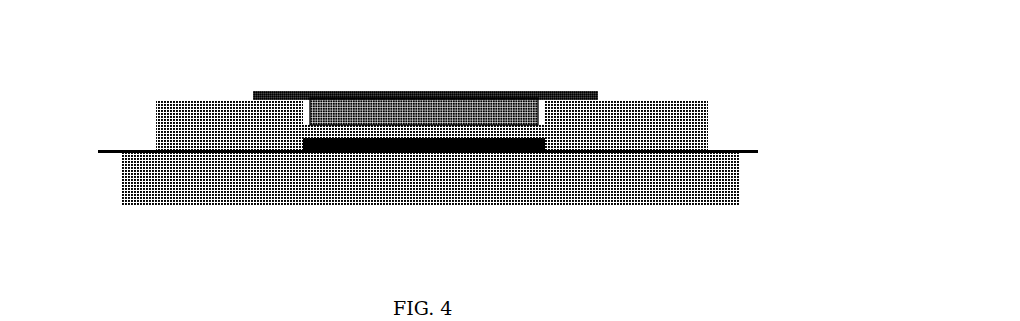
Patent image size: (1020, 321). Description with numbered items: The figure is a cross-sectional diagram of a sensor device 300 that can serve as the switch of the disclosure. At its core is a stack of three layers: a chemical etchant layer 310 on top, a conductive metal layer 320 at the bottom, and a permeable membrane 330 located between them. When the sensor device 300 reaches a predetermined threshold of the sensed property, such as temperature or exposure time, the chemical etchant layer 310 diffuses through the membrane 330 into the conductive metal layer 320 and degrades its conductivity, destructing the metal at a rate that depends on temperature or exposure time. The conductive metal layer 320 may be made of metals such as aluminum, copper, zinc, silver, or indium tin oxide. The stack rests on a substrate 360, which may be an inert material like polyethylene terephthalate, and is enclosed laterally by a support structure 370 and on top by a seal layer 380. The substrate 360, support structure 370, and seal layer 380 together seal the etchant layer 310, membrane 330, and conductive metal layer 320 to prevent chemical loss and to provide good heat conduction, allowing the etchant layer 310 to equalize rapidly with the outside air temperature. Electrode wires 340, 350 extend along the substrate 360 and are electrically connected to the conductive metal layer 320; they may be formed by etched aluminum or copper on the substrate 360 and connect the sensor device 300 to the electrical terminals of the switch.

The sensor device 300 is at (747, 43).
The chemical etchant layer 310 is at (522, 110).
The conductive metal layer 320 is at (537, 136).
The permeable membrane 330 is at (295, 123).
The electrode wire 340 is at (97, 142).
The electrode wire 350 is at (742, 141).
The substrate 360 is at (112, 182).
The support structure 370 is at (197, 90).
The seal layer 380 is at (285, 83).